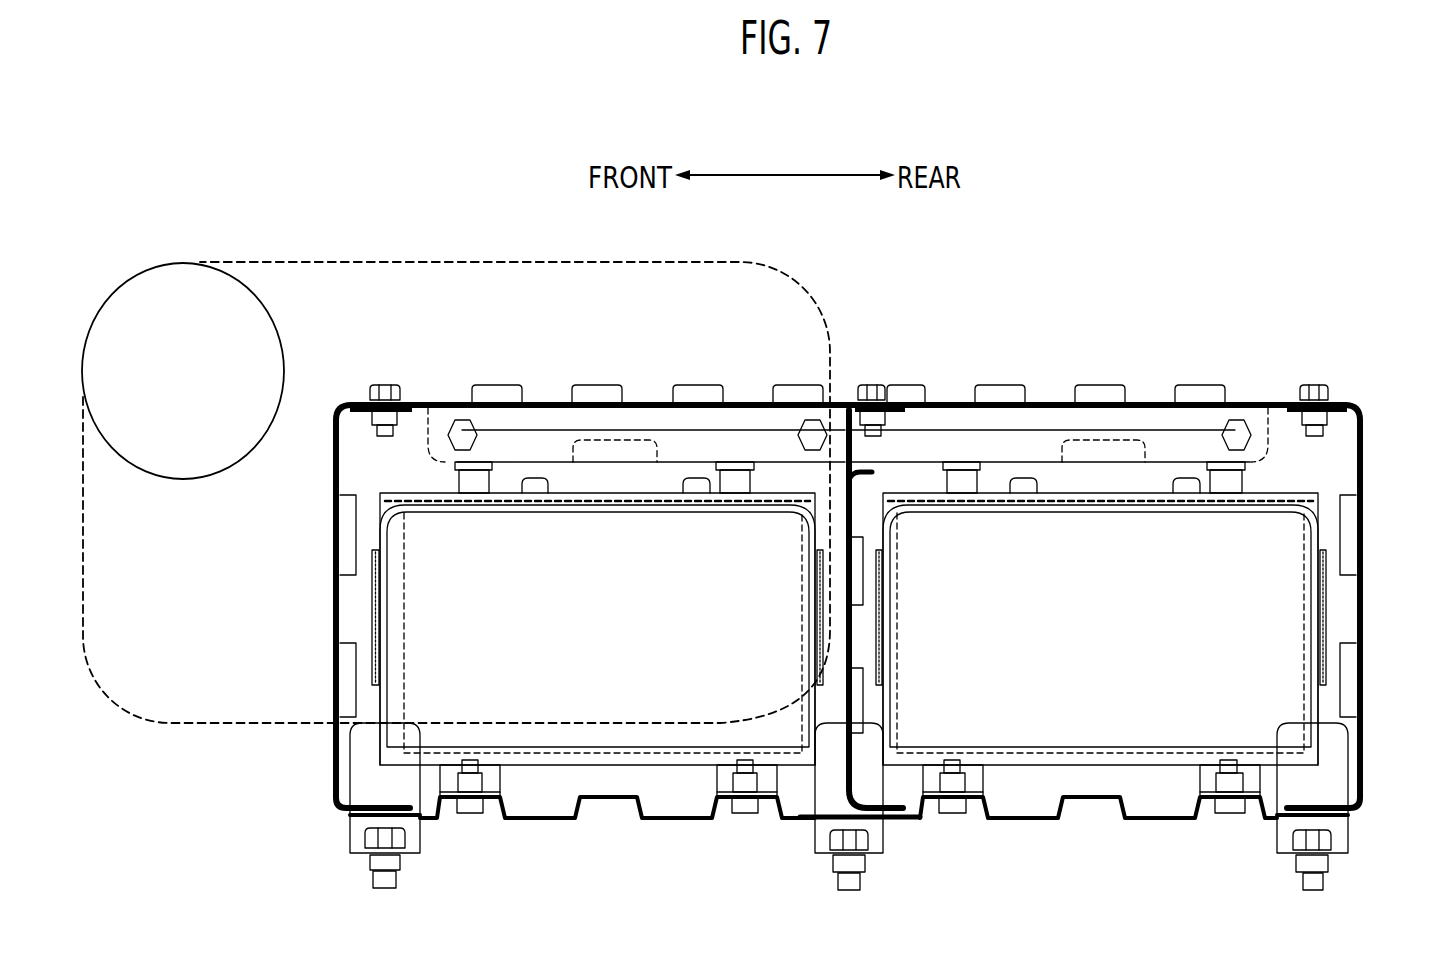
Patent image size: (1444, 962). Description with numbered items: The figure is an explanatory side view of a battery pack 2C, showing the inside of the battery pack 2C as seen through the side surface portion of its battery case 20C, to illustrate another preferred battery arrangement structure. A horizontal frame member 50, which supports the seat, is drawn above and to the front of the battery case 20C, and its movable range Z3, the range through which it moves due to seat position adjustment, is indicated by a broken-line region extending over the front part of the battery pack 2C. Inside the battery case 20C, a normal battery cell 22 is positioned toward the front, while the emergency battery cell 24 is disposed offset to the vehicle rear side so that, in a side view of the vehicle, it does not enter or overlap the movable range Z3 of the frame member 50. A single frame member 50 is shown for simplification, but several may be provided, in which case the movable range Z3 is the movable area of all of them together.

The frame member 50 is at (183, 480).
The movable range Z3 is at (645, 262).
The battery pack 2C is at (1316, 306).
The battery case 20C is at (1360, 465).
The normal battery cell 22 is at (420, 616).
The emergency battery cell 24 is at (1275, 615).